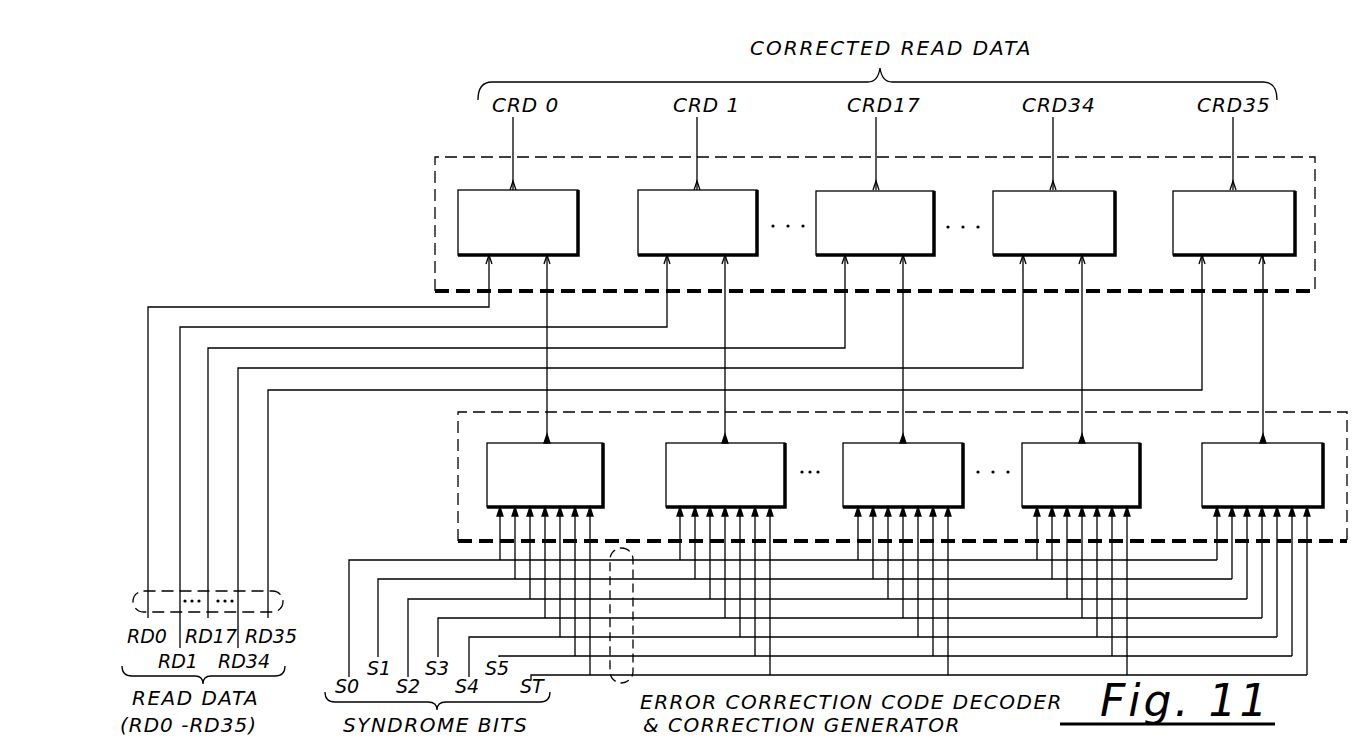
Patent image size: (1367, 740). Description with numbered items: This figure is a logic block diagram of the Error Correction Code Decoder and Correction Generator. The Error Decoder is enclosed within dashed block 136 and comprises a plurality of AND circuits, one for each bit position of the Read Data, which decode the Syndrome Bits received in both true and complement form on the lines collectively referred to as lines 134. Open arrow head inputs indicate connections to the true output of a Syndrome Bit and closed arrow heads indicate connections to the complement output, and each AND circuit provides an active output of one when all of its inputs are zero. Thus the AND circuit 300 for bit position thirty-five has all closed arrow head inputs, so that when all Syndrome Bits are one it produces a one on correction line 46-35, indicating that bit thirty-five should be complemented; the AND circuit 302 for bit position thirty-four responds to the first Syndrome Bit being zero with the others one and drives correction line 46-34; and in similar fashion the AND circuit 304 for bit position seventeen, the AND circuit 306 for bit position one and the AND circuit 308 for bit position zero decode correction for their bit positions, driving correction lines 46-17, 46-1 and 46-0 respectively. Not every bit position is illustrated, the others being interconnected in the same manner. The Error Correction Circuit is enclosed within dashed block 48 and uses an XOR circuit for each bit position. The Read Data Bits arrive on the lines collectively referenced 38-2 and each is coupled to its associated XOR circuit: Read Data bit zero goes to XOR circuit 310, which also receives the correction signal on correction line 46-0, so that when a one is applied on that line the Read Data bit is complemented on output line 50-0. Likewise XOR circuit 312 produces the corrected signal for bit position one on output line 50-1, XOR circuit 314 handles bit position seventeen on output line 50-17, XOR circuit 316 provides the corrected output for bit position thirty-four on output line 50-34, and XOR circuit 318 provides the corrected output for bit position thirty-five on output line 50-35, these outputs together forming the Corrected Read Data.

The Error Correction Circuit 48 is at (435, 248).
The Error Decoder 136 is at (1346, 411).
The output line for bit position 0 50-0 is at (513, 152).
The output line for bit position 1 50-1 is at (697, 152).
The output line for bit position 17 50-17 is at (876, 150).
The output line for bit position 34 50-34 is at (1053, 150).
The output line for bit position 35 50-35 is at (1233, 150).
The XOR circuit 310 is at (579, 212).
The XOR circuit 312 is at (758, 212).
The XOR circuit 314 is at (935, 211).
The XOR circuit 316 is at (1116, 211).
The XOR circuit 318 is at (1173, 247).
The correction line 46-0 is at (548, 323).
The correction line 46-1 is at (726, 324).
The correction line 46-17 is at (904, 324).
The correction line 46-34 is at (1083, 324).
The correction line 46-35 is at (1264, 324).
The AND circuit AND-0 308 is at (604, 445).
The AND circuit AND-1 306 is at (790, 435).
The AND circuit AND-17 304 is at (972, 435).
The AND circuit AND-34 302 is at (1152, 435).
The AND circuit AND-35 300 is at (1325, 435).
The Read Data lines 38-2 is at (277, 591).
The Syndrome Bit lines 134 is at (622, 684).